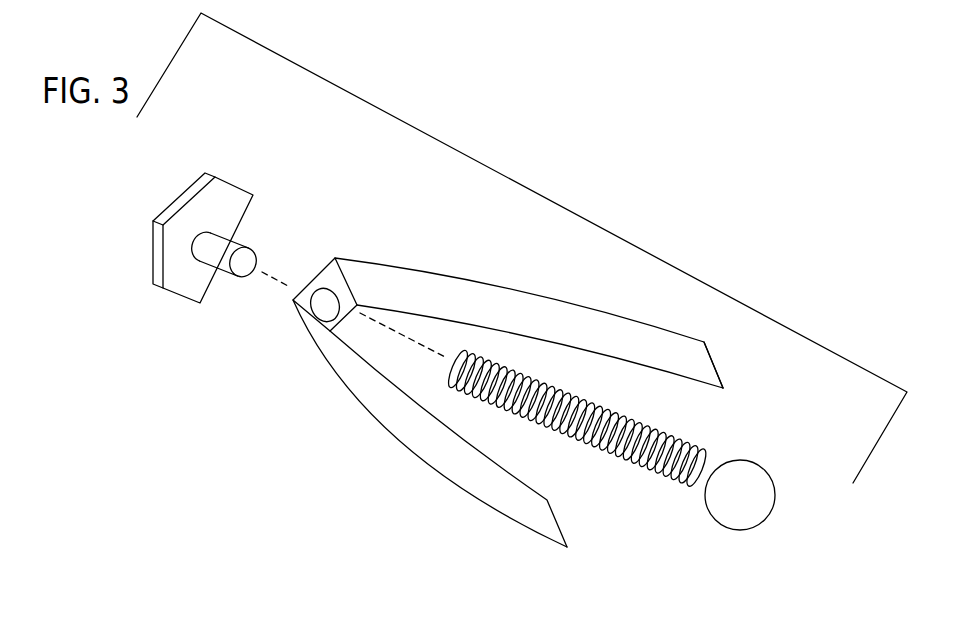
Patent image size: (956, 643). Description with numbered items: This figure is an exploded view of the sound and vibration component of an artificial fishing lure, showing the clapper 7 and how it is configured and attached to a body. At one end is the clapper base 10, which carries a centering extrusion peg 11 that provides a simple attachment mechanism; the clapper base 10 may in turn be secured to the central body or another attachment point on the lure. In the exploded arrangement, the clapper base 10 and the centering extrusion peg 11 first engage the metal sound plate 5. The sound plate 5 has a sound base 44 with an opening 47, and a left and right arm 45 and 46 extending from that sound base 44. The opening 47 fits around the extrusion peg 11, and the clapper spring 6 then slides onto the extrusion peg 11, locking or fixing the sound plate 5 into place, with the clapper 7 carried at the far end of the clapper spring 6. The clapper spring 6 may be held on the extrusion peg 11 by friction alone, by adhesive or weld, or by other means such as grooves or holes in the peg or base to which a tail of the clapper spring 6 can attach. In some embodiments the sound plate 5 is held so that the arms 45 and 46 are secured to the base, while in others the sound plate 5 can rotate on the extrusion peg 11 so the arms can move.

The metal sound plate 5 is at (530, 292).
The clapper spring 6 is at (620, 467).
The clapper 7 is at (740, 517).
The clapper base 10 is at (180, 200).
The centering extrusion peg 11 is at (223, 257).
The sound base 44 is at (331, 258).
The left arm 45 is at (714, 362).
The right arm 46 is at (542, 535).
The opening 47 is at (330, 292).